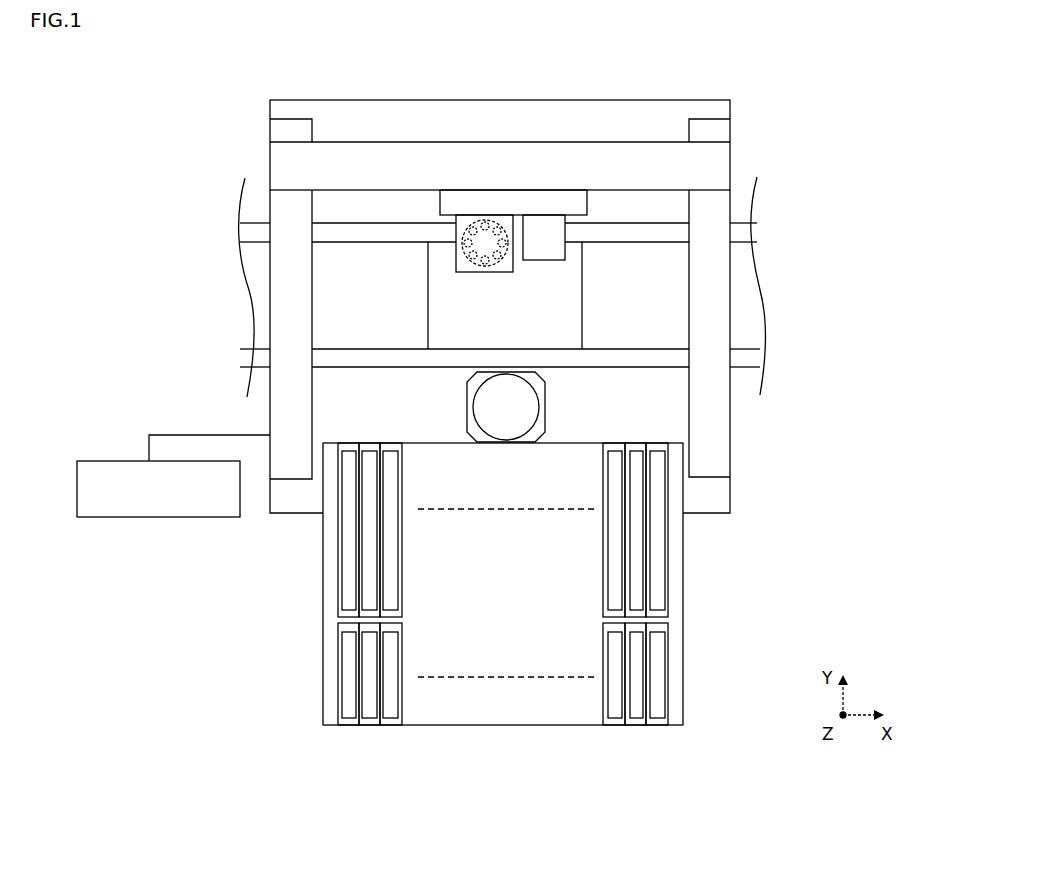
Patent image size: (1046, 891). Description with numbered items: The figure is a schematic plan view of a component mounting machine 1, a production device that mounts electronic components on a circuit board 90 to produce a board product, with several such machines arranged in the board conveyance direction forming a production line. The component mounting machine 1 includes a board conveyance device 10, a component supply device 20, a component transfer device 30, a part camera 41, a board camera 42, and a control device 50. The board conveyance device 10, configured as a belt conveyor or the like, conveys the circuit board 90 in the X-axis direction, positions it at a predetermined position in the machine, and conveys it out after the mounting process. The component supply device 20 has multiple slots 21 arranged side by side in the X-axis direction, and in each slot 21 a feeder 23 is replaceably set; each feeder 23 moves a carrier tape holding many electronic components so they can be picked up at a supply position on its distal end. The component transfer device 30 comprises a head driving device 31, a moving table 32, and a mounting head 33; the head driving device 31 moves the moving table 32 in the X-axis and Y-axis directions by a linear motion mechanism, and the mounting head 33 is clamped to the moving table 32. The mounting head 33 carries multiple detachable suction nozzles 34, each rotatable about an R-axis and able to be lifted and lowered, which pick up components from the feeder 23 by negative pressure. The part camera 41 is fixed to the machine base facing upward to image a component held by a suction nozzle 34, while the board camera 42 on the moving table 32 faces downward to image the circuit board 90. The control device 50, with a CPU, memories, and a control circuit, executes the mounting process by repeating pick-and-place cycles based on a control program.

The component mounting machine 1 is at (747, 115).
The board conveyance device 10 is at (327, 313).
The component supply device 20 is at (316, 654).
The slot 21 is at (348, 720).
The feeder 23 is at (345, 521).
The component transfer device 30 is at (460, 292).
The head driving device 31 is at (722, 153).
The moving table 32 is at (545, 200).
The mounting head 33 is at (485, 226).
The suction nozzle 34 is at (443, 242).
The part camera 41 is at (530, 400).
The board camera 42 is at (548, 262).
The control device 50 is at (172, 517).
The circuit board 90 is at (440, 285).